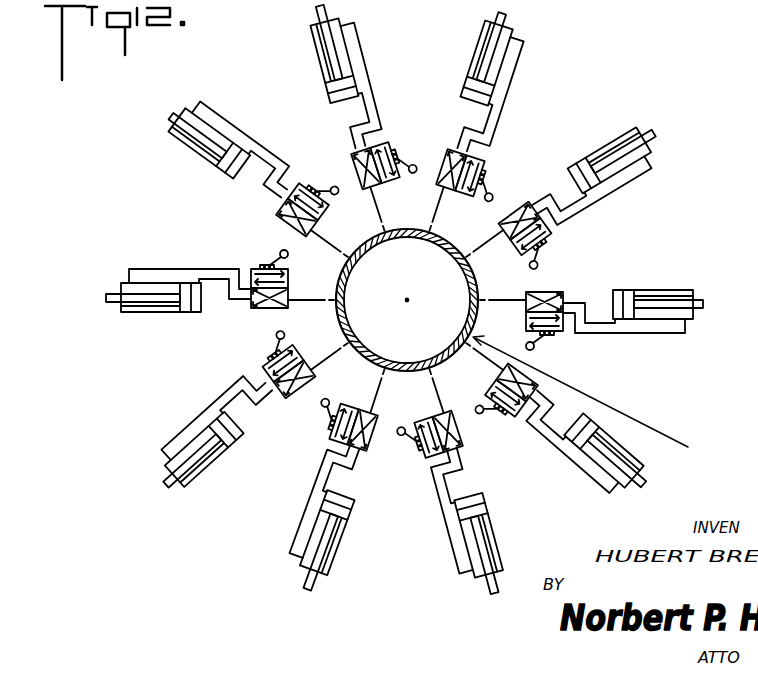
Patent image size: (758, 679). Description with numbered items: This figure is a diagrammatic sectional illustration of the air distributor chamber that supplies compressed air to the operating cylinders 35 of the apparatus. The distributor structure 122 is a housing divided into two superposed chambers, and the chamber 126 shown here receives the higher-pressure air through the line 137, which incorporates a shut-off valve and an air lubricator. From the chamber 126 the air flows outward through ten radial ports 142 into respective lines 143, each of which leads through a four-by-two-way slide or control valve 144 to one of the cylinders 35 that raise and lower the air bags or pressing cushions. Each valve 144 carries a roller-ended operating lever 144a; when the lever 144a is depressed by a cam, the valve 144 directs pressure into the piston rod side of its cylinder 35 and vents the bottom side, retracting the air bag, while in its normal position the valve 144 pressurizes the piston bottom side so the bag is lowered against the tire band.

The cylinder 35 is at (477, 41).
The distributor structure 122 is at (469, 242).
The chamber 126 is at (421, 330).
The line 137 is at (638, 423).
The radial port 142 is at (460, 261).
The line 143 is at (380, 213).
The 4/2-way slide or control valve 144 is at (285, 218).
The roller-ended operating lever 144a is at (333, 188).